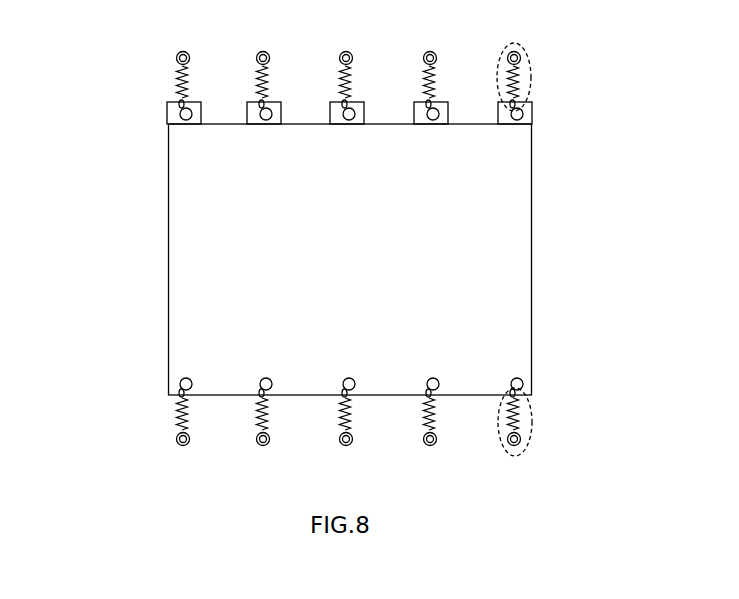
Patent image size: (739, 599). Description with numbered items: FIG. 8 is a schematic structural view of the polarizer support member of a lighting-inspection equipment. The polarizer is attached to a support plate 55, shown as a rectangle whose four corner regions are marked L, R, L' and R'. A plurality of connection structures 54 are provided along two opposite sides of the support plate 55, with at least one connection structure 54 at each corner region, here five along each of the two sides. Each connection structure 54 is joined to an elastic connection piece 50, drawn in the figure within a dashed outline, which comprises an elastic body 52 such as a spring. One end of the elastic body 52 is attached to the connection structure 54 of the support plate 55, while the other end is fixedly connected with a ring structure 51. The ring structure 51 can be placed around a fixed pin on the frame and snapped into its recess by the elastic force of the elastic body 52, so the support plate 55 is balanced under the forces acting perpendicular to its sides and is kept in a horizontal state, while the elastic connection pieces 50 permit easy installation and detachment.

The elastic connection piece 50 is at (523, 78).
The ring structure 51 is at (508, 52).
The elastic body 52 is at (509, 82).
The connection structure 54 is at (525, 122).
The support plate 55 is at (202, 255).